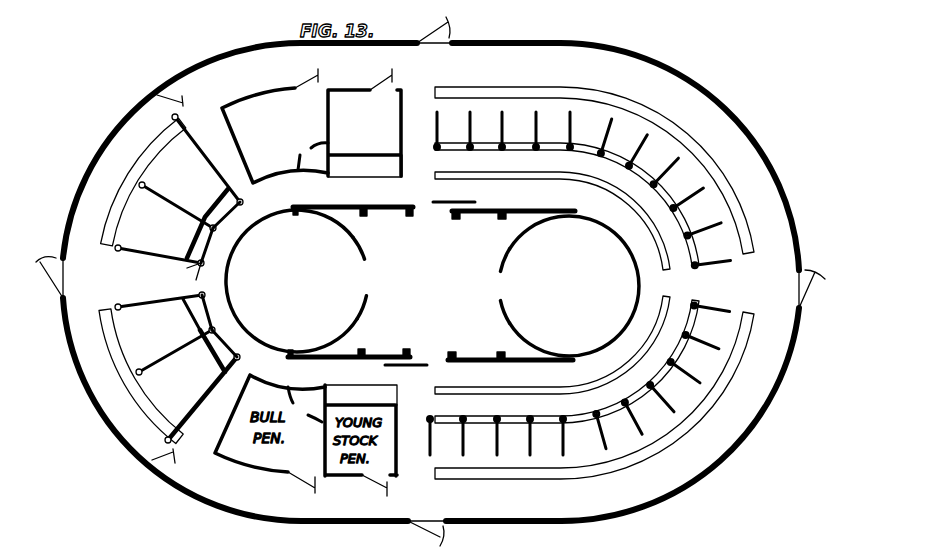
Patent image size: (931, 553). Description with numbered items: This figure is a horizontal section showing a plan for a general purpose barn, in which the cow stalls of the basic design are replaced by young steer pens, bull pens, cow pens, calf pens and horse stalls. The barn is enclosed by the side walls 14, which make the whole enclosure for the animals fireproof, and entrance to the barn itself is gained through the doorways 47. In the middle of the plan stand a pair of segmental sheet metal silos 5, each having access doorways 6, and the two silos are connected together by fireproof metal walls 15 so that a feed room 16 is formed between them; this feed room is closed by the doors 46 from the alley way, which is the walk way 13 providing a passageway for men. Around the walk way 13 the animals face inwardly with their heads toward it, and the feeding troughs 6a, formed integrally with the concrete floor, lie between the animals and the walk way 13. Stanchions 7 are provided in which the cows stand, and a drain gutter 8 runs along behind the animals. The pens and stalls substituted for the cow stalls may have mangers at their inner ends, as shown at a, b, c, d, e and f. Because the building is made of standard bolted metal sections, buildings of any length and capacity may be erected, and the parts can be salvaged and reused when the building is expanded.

The segmental sheet metal silo 5 is at (243, 322).
The access doorways 6 is at (365, 278).
The feeding troughs 6a is at (638, 369).
The stanchions 7 is at (643, 135).
The drain gutter 8 is at (130, 174).
The walk way 13 is at (312, 135).
The side walls 14 is at (690, 83).
The fireproof metal walls 15 is at (520, 363).
The feed room 16 is at (458, 282).
The doors 46 is at (432, 208).
The doorways 47 is at (440, 48).
The manger a is at (313, 156).
The manger b is at (226, 214).
The manger c is at (203, 245).
The manger d is at (202, 312).
The manger e is at (224, 344).
The manger f is at (305, 404).